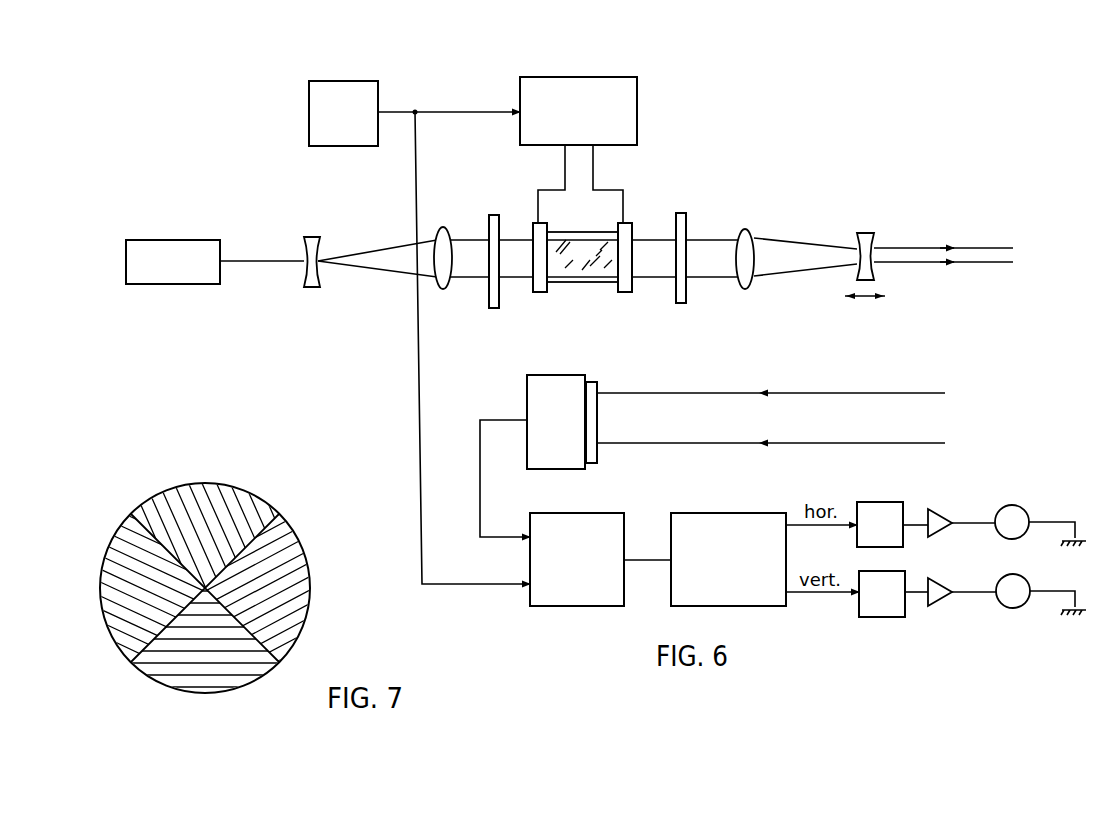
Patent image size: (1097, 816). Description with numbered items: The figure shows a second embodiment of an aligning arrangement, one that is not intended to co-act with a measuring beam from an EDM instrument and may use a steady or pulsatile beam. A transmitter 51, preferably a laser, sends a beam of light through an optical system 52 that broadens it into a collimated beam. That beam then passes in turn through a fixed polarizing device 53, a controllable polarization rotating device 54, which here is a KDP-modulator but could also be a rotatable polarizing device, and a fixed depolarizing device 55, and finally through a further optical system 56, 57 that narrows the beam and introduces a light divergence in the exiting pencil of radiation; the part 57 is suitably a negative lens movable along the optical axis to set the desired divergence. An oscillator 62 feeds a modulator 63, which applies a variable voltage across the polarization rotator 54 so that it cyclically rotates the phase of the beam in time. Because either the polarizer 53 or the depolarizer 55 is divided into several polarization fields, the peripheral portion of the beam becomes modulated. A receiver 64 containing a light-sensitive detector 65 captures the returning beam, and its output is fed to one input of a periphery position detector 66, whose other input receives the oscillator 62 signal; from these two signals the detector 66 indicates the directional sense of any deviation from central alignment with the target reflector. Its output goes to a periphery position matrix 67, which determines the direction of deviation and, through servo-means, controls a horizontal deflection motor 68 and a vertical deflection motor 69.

In FIG. 6, the transmitter 51 is at (201, 239).
In FIG. 6, the optical system 52 is at (317, 237).
In FIG. 6, the fixed polarizing device 53 is at (505, 200).
In FIG. 6, the controllable polarization rotating device 54 is at (565, 232).
In FIG. 6, the fixed depolarizing device 55 is at (678, 197).
In FIG. 7, the fixed depolarizing device 55 is at (142, 679).
In FIG. 6, the further optical system 56 is at (742, 230).
In FIG. 6, the negative lens 57 is at (871, 232).
In FIG. 6, the oscillator 62 is at (352, 146).
In FIG. 6, the modulator 63 is at (627, 145).
In FIG. 6, the receiver 64 is at (546, 358).
In FIG. 6, the detector 65 is at (593, 382).
In FIG. 6, the periphery position detector 66 is at (533, 513).
In FIG. 6, the periphery position matrix 67 is at (699, 513).
In FIG. 6, the horizontal deflection motor 68 is at (1020, 489).
In FIG. 6, the vertical deflection motor 69 is at (1006, 607).